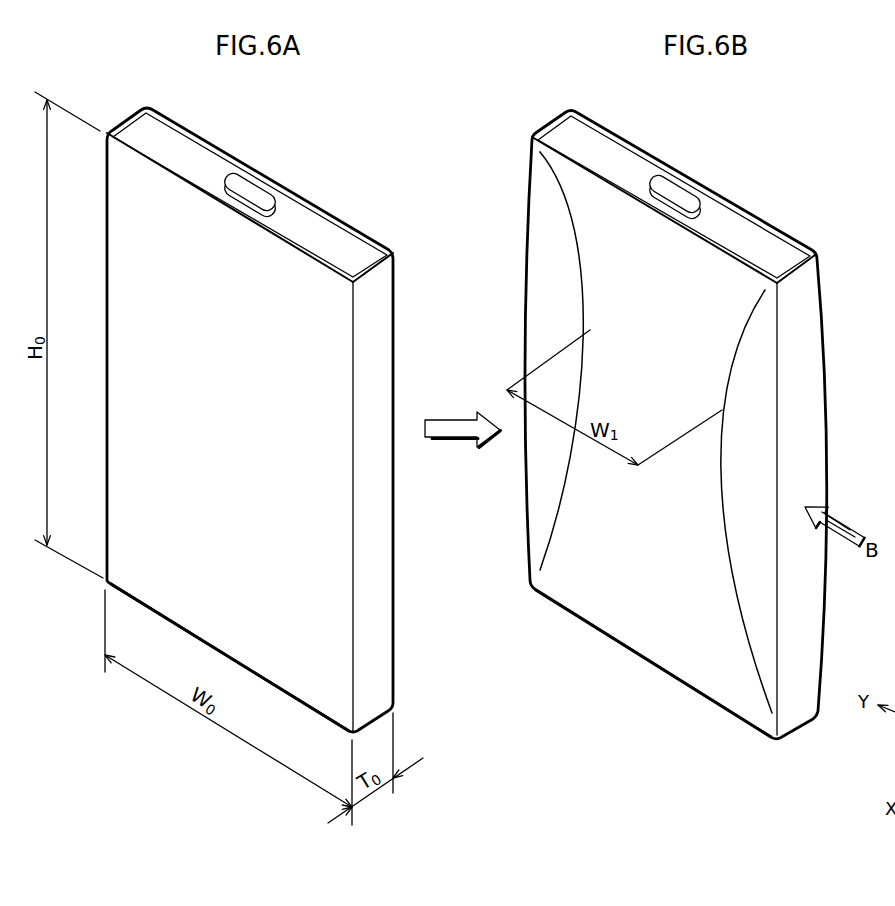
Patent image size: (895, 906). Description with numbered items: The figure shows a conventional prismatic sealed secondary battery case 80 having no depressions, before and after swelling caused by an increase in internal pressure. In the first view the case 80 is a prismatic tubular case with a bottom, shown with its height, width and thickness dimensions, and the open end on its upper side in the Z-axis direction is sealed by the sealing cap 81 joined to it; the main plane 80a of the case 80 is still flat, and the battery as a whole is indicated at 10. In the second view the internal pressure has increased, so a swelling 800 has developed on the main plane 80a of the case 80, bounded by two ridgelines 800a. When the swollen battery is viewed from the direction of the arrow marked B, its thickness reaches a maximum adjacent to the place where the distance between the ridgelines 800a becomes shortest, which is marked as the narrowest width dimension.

In FIG. 6A, the exterior case / electronic device 10 is at (239, 420).
In FIG. 6A, the sealing cap 81 is at (313, 225).
In FIG. 6B, the sealing cap 81 is at (588, 135).
In FIG. 6B, the case 80 is at (653, 408).
In FIG. 6A, the main plane 80a is at (128, 575).
In FIG. 6B, the main plane 80a is at (675, 652).
In FIG. 6B, the swelling 800 is at (620, 436).
In FIG. 6B, the ridgelines 800a is at (742, 573).